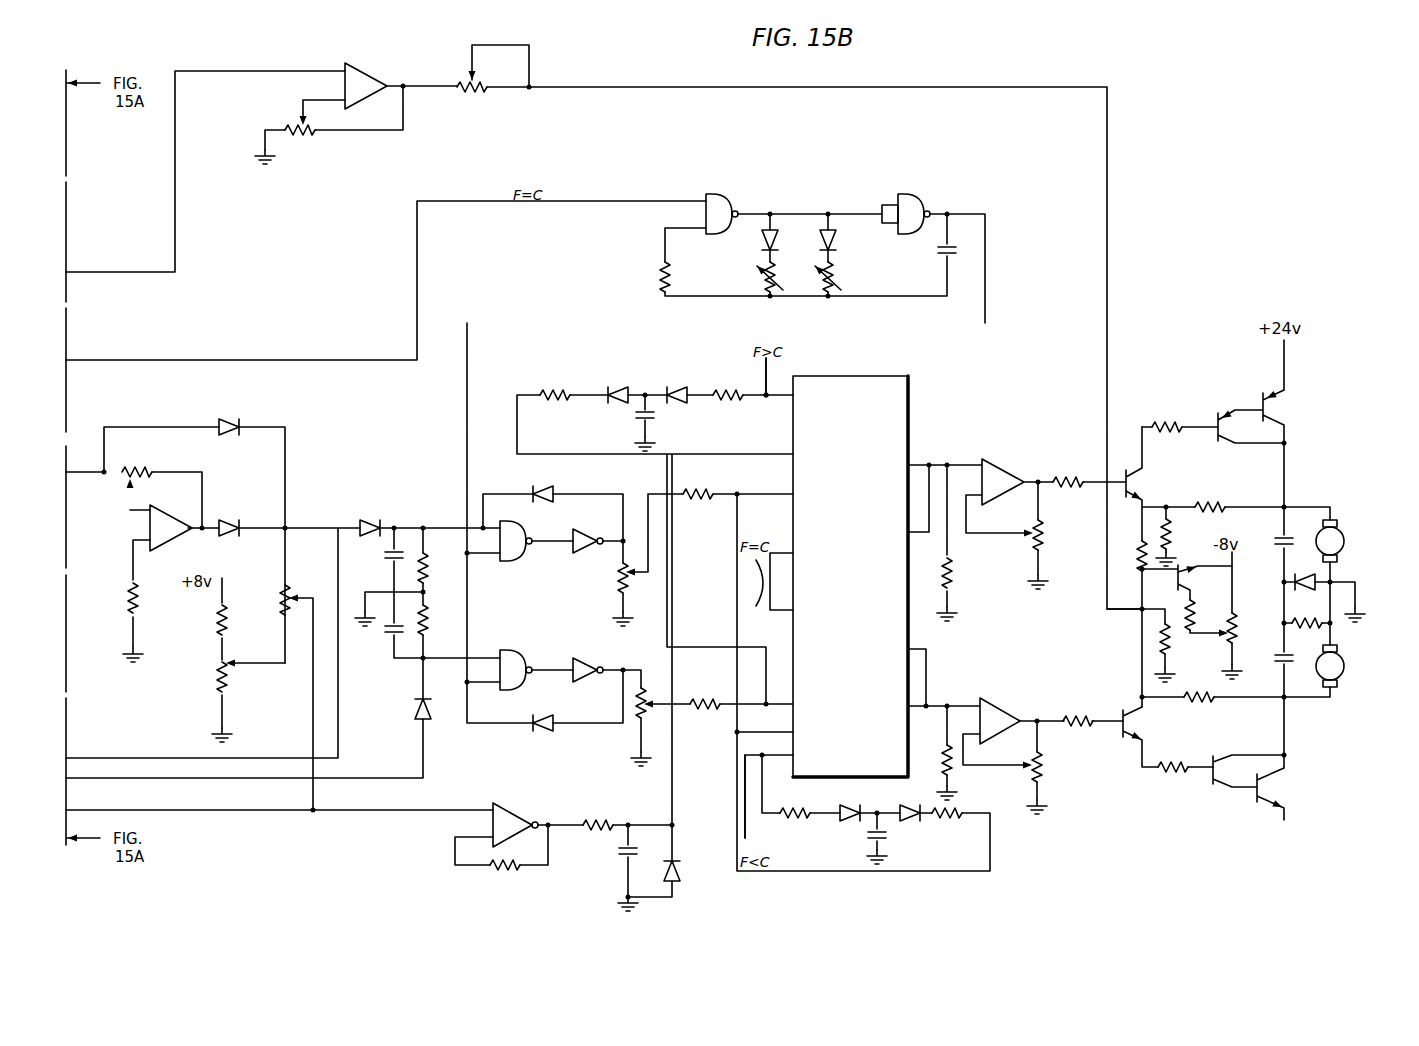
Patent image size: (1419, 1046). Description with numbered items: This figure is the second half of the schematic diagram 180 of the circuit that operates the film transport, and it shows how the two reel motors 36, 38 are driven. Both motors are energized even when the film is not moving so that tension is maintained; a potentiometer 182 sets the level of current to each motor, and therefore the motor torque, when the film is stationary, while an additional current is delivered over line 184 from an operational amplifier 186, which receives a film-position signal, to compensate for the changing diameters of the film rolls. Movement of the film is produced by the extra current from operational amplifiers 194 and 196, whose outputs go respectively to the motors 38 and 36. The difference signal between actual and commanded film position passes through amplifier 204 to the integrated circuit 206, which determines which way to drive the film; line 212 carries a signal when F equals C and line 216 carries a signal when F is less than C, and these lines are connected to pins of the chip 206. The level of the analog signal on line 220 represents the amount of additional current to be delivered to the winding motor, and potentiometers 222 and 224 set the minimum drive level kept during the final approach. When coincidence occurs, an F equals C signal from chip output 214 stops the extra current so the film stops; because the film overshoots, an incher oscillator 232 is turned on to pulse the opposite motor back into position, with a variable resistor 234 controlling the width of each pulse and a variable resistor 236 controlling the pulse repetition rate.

The operational amplifier 186 is at (357, 70).
The incher oscillator 232 is at (830, 196).
The variable resistor 234 is at (756, 266).
The variable resistor 236 is at (838, 276).
The line 212 is at (764, 378).
The integrated circuit 206 is at (912, 410).
The chip output 214 is at (769, 600).
The line 216 is at (748, 828).
The amplifier 204 is at (522, 800).
The line 220 is at (640, 820).
The potentiometer 222 is at (220, 677).
The potentiometer 224 is at (280, 596).
The operational amplifier 194 is at (1010, 455).
The operational amplifier 196 is at (1006, 690).
The potentiometer 182 is at (1148, 569).
The line 184 is at (1116, 610).
The schematic diagram 180 is at (1348, 714).
The reel motor 38 is at (1342, 552).
The reel motor 36 is at (1340, 656).